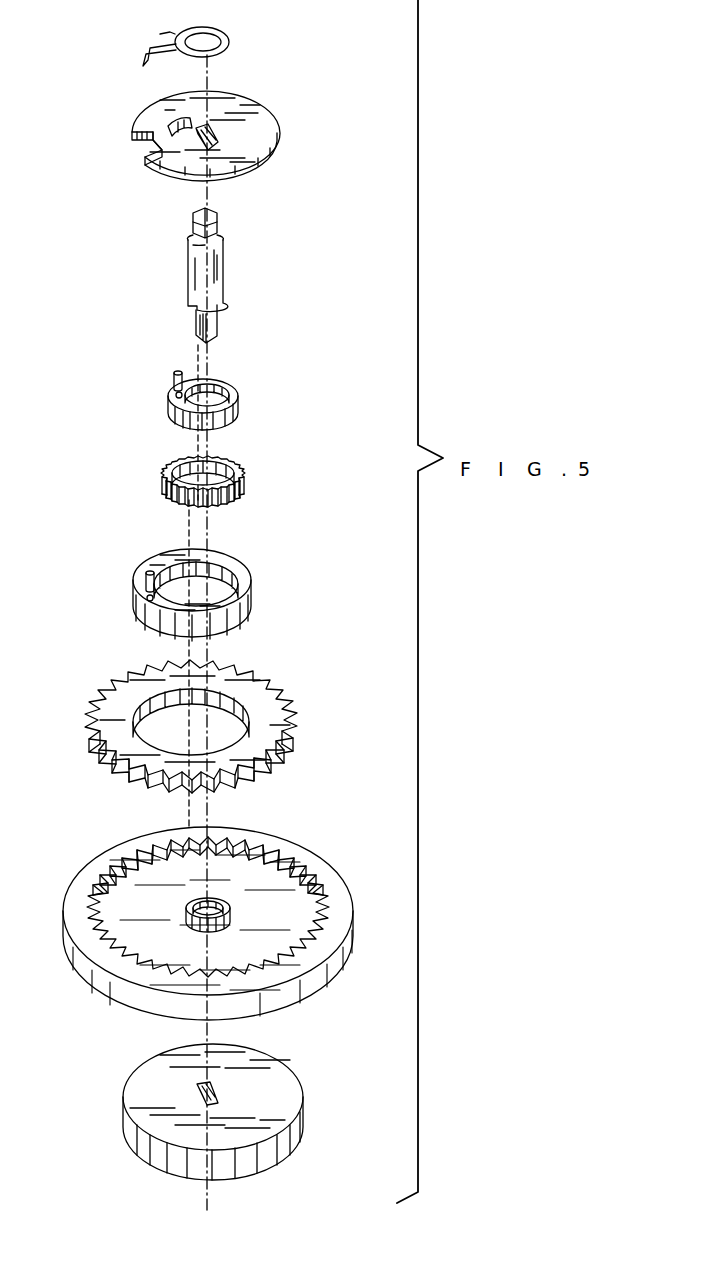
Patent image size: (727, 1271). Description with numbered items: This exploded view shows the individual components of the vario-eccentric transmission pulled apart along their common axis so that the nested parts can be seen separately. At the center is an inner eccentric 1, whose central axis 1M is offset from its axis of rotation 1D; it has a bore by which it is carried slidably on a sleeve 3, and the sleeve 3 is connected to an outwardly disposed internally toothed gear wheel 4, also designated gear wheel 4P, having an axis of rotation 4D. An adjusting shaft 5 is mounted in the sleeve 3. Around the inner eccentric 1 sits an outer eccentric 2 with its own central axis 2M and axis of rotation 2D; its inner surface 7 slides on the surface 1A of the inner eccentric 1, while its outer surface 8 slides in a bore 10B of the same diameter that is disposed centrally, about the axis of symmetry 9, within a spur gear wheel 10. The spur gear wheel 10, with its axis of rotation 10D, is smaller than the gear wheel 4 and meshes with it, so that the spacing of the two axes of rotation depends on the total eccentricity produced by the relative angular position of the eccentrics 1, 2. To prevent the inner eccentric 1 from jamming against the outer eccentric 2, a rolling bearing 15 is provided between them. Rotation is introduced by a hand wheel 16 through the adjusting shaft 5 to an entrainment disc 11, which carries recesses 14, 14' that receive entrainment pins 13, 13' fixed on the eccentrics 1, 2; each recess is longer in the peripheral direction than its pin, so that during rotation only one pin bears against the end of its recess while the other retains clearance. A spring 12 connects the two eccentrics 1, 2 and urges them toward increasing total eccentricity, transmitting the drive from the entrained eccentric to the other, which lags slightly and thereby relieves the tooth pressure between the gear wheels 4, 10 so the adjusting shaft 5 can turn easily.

The inner eccentric 1 is at (186, 403).
The surface 1A is at (222, 426).
The central axis 1M is at (198, 355).
The axis of rotation 1D is at (207, 361).
The outer eccentric 2 is at (174, 595).
The central axis 2M is at (189, 533).
The axis of rotation 2D is at (207, 522).
The sleeve 3 is at (232, 905).
The internally toothed gear wheel 4 is at (226, 923).
The axis of rotation 4D is at (208, 814).
The gear wheel 4P is at (300, 918).
The adjusting shaft 5 is at (212, 276).
The inner surface 7 is at (235, 573).
The outer surface 8 is at (250, 615).
The axis of symmetry 9 is at (189, 655).
The spur gear wheel 10 is at (198, 726).
The bore 10B is at (228, 728).
The axis of rotation 10D is at (190, 722).
The entrainment disc 11 is at (266, 135).
The spring 12 is at (226, 36).
The entrainment pin 13 is at (107, 593).
The entrainment pin 13' is at (133, 384).
The recess 14 is at (112, 148).
The recess 14' is at (149, 122).
The rolling bearing 15 is at (245, 490).
The hand wheel 16 is at (136, 1092).